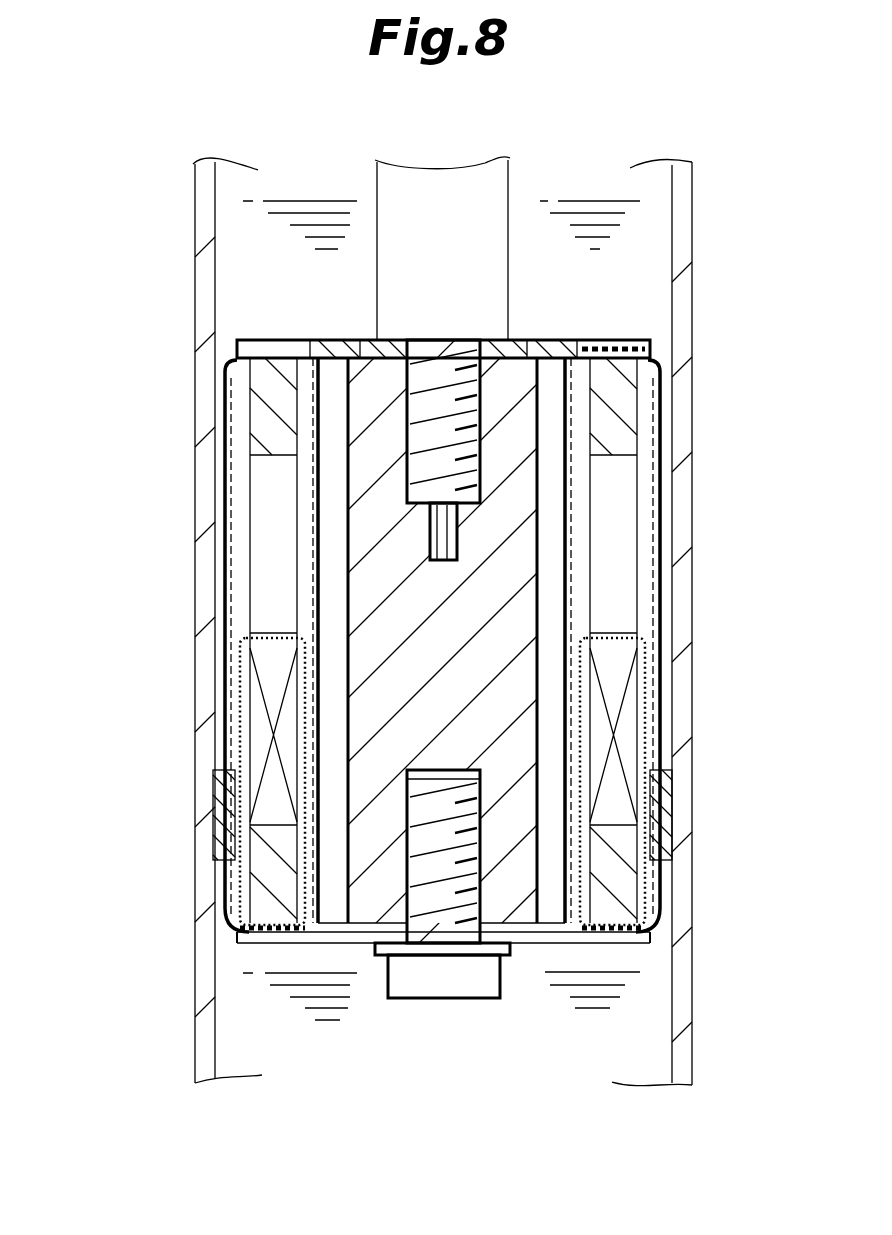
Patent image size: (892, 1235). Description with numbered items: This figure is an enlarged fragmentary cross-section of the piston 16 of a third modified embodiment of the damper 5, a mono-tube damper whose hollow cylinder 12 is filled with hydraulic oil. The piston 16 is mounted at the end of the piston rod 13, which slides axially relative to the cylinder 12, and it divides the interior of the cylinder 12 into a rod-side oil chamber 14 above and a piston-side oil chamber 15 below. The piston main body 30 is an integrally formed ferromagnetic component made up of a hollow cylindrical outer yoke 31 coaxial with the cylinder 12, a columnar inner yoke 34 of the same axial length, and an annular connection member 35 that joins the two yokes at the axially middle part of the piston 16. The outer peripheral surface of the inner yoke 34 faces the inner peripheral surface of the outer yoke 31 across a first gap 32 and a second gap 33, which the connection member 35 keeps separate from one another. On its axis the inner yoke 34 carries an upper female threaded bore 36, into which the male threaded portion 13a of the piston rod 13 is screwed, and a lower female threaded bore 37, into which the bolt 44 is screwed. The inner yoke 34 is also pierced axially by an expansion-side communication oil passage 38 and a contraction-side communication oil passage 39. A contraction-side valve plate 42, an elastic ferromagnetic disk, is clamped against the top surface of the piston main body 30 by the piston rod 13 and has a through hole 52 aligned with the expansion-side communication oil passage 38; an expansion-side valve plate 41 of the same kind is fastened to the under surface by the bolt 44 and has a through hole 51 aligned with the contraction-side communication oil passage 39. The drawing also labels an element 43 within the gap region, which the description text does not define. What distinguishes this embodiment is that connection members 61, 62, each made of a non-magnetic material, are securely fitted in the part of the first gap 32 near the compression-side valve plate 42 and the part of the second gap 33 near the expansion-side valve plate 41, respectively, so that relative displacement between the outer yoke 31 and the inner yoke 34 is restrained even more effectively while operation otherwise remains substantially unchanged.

The damper 5 is at (150, 172).
The hollow cylinder 12 is at (197, 368).
The piston rod 13 is at (486, 322).
The male threaded portion 13a is at (580, 442).
The rod-side oil chamber 14 is at (608, 322).
The piston-side oil chamber 15 is at (636, 1062).
The piston 16 is at (192, 516).
The piston main body 30 is at (225, 632).
The outer yoke 31 is at (228, 868).
The first gap 32 is at (628, 540).
The second gap 33 is at (664, 772).
The inner yoke 34 is at (298, 880).
The connection member 35 is at (300, 652).
The female threaded bore 36 is at (480, 393).
The female threaded bore 37 is at (590, 825).
The expansion-side communication oil passage 38 is at (335, 560).
The contraction-side communication oil passage 39 is at (562, 566).
The expansion-side valve plate 41 is at (368, 946).
The contraction-side valve plate 42 is at (622, 338).
The left spring 43 is at (262, 724).
The bolt 44 is at (440, 1000).
The through hole 51 is at (532, 948).
The through hole 52 is at (326, 340).
The connection member 61 is at (470, 412).
The connection member 62 is at (622, 892).